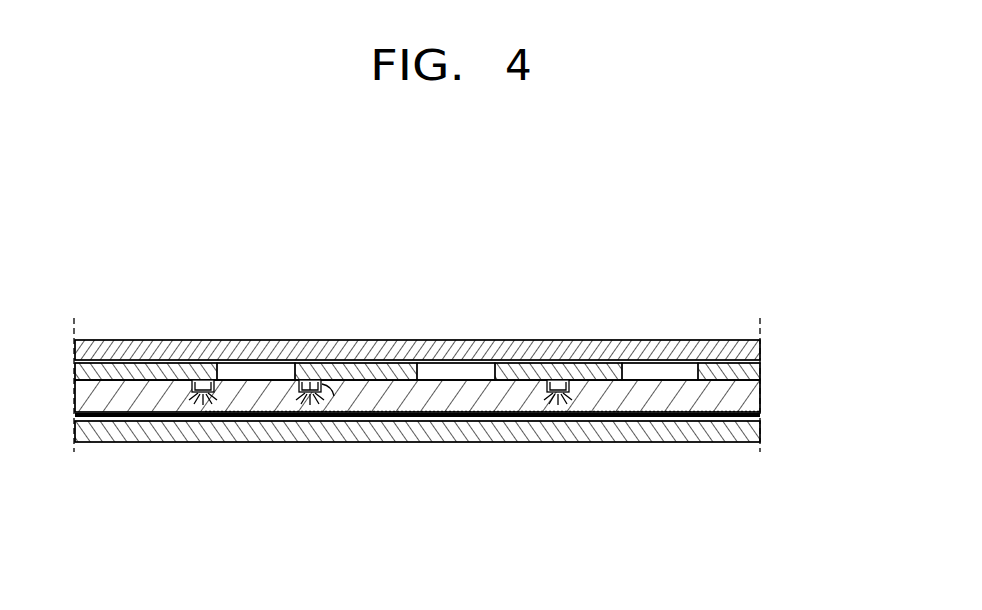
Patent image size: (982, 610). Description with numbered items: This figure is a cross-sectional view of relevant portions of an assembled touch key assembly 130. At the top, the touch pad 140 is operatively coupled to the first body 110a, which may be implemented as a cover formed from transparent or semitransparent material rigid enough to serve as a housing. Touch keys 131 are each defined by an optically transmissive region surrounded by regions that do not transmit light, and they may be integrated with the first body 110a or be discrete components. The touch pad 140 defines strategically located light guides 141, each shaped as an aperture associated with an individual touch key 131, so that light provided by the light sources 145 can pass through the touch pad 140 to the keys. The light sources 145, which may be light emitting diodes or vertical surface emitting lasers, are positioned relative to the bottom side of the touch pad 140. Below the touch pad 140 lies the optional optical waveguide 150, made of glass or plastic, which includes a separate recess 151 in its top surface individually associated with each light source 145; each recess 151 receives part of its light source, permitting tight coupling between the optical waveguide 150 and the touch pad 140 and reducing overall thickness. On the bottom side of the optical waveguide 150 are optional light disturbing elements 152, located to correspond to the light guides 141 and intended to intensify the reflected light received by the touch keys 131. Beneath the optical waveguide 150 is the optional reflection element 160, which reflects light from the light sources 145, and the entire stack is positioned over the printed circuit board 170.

The touch key assembly 130 is at (474, 268).
The first body 110a is at (760, 342).
The touch pad 140 is at (760, 369).
The light guide 141 is at (446, 374).
The touch key 131 is at (665, 363).
The optical waveguide 150 is at (752, 395).
The light source 145 is at (308, 394).
The recess 151 is at (334, 400).
The light disturbing element 152 is at (508, 413).
The reflection element 160 is at (760, 418).
The printed circuit board 170 is at (760, 437).